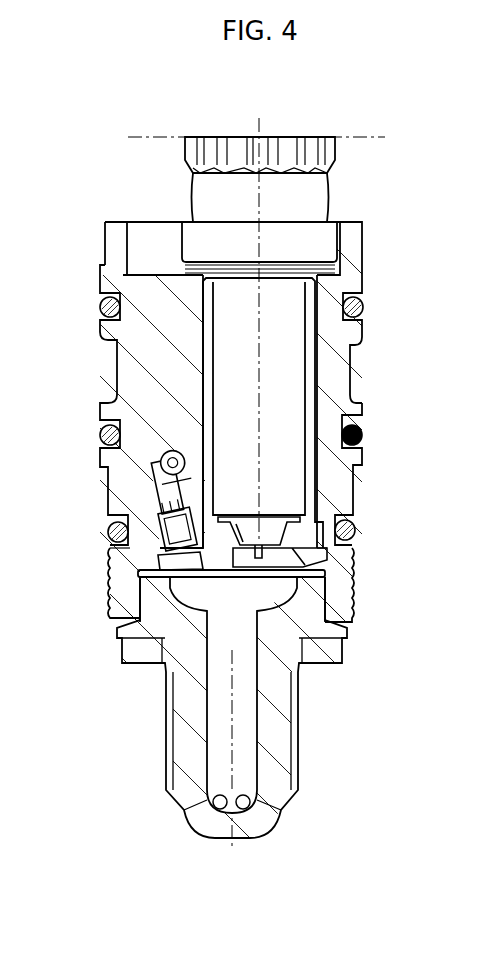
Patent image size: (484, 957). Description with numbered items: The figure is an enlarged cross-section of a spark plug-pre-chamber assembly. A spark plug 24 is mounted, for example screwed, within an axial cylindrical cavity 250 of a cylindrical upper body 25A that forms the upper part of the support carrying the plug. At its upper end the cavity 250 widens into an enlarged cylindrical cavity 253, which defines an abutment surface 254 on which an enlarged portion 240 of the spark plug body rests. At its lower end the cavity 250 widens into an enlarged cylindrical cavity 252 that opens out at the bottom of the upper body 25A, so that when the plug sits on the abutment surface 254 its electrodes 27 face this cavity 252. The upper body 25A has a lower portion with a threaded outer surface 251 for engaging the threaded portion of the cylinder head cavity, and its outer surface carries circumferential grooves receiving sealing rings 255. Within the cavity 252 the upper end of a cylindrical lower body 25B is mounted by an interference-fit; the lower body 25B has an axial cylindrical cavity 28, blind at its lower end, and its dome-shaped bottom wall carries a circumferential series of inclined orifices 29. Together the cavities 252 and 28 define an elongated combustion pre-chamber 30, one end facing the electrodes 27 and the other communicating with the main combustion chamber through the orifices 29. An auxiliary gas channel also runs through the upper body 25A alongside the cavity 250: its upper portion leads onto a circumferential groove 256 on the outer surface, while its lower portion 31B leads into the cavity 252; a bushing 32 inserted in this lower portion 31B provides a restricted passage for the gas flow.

The spark plug 24 is at (183, 154).
The enlarged portion of the spark plug body 240 is at (338, 236).
The enlarged cylindrical cavity 253 is at (124, 242).
The abutment surface 254 is at (162, 272).
The upper body 25A is at (113, 378).
The sealing rings 255 is at (364, 306).
The circumferential groove 256 is at (352, 343).
The axial cylindrical cavity 250 is at (216, 426).
The spark plug electrodes 27 is at (272, 562).
The lower portion of the channel 31B is at (167, 490).
The bushing 32 is at (151, 520).
The threaded outer surface 251 is at (132, 559).
The enlarged cylindrical cavity 252 is at (322, 590).
The lower body 25B is at (160, 745).
The combustion pre-chamber 30 is at (238, 667).
The axial cylindrical cavity 28 is at (246, 722).
The orifices 29 is at (187, 812).